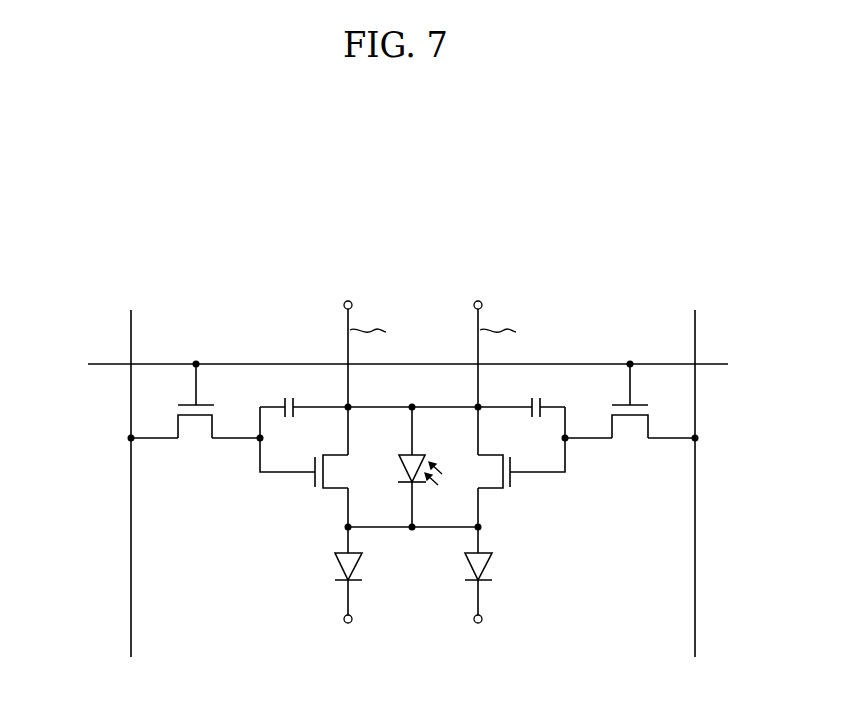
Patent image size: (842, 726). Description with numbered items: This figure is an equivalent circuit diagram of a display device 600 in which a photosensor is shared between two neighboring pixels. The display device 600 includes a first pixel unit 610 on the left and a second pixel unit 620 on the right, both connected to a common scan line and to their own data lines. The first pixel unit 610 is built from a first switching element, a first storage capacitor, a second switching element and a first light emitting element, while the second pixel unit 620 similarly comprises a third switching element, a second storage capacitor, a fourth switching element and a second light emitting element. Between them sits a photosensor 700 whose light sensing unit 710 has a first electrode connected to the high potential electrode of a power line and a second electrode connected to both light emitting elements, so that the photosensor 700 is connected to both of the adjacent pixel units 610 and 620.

The display device 600 is at (300, 215).
The first pixel unit 610 is at (231, 348).
The second pixel unit 620 is at (584, 348).
The photosensor 700 is at (406, 497).
The light sensing unit 710 is at (405, 455).